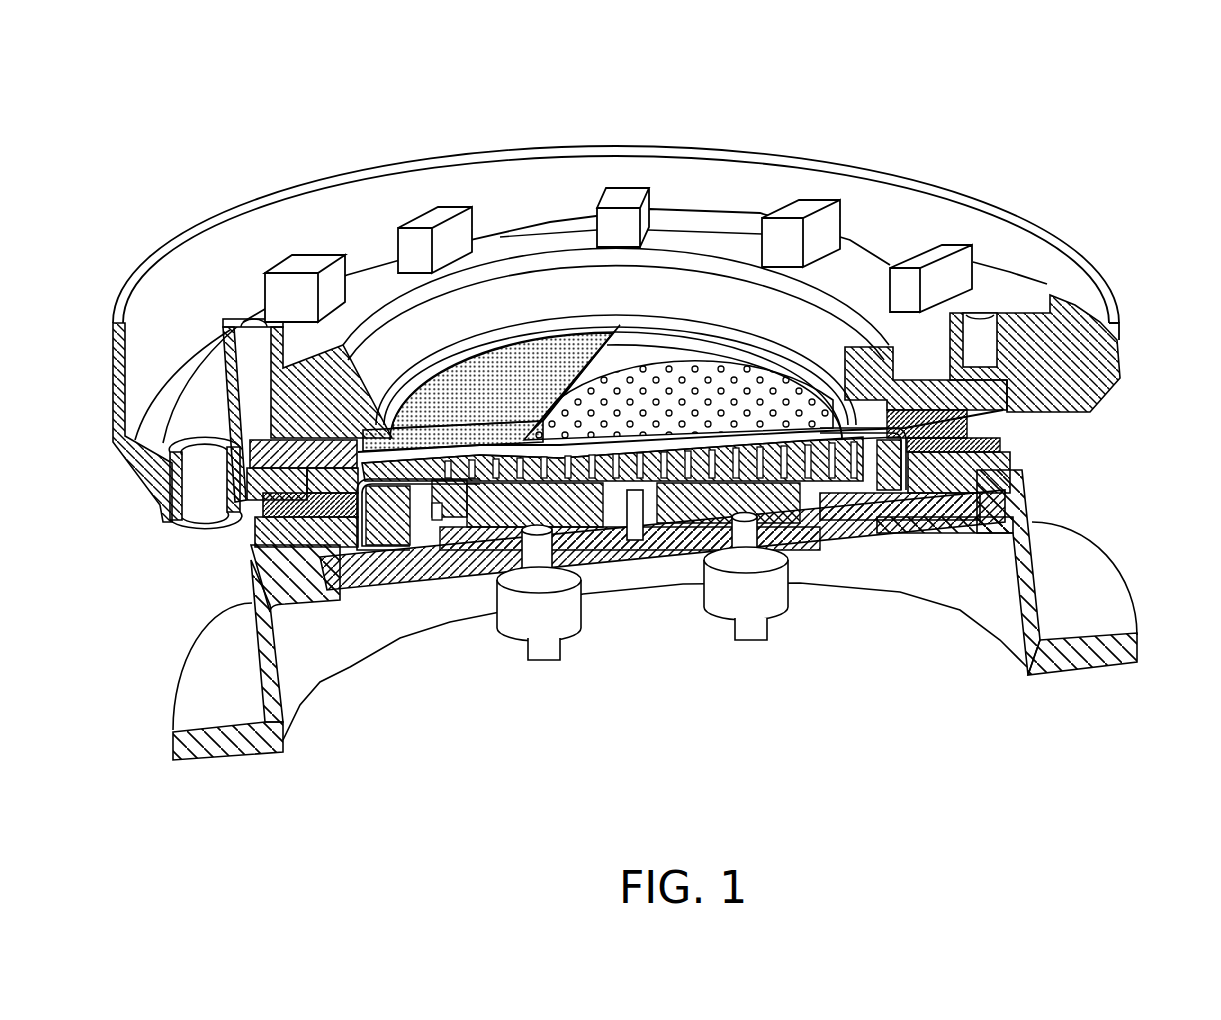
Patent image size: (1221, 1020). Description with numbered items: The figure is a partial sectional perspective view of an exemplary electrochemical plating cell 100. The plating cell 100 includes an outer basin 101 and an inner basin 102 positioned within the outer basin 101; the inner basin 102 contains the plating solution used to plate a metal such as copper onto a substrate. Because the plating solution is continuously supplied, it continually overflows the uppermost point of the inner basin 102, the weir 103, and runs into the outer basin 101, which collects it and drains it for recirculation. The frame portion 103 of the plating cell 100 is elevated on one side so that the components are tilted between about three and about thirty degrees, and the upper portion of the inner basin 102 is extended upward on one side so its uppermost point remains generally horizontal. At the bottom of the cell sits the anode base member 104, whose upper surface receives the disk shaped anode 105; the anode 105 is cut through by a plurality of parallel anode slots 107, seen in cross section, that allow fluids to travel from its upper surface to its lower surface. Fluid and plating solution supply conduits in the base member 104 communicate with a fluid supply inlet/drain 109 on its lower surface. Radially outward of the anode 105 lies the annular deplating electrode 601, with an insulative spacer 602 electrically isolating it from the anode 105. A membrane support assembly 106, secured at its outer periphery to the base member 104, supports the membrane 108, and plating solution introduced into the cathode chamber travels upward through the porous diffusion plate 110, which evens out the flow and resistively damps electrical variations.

The electrochemical plating cell 100 is at (383, 150).
The outer basin 101 is at (1117, 312).
The inner basin 102 is at (842, 282).
The weir (frame portion) 103 is at (1044, 503).
The anode base member 104 is at (700, 495).
The anode 105 is at (468, 478).
The membrane support assembly 106 is at (874, 432).
The anode slots 107 is at (607, 520).
The membrane 108 is at (685, 400).
The fluid supply inlet/drain 109 is at (547, 660).
The diffusion plate 110 is at (525, 373).
The deplating electrode 601 is at (823, 487).
The insulative spacer 602 is at (805, 478).